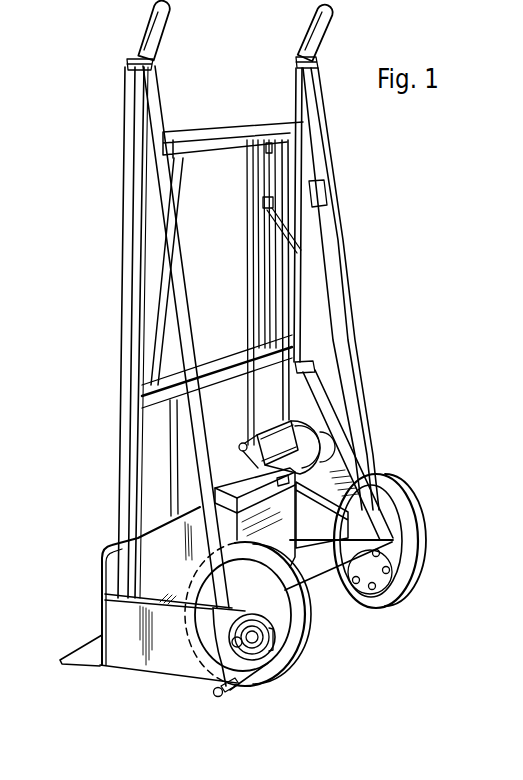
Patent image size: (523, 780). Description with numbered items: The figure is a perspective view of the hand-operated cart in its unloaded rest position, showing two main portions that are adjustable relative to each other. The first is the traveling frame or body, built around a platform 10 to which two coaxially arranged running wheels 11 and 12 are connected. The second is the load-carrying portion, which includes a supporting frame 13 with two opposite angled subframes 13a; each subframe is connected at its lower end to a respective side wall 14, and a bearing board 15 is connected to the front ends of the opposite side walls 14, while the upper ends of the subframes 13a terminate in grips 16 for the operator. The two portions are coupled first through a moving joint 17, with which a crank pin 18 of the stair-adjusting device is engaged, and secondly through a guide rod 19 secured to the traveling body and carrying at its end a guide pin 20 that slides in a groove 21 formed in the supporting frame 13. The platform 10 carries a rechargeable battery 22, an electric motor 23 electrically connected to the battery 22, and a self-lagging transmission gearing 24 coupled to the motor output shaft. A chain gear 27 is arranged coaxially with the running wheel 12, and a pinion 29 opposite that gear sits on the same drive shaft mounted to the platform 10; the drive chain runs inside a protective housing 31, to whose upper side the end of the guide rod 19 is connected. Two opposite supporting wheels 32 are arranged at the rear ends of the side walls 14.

The platform 10 is at (325, 574).
The running wheel 11 is at (305, 620).
The running wheel 12 is at (420, 562).
The supporting frame 13 is at (227, 133).
The angled subframes 13a is at (163, 244).
The side wall 14 is at (130, 650).
The bearing board 15 is at (88, 653).
The grips 16 is at (312, 27).
The moving joint 17 is at (214, 694).
The crank pin 18 is at (233, 693).
The guide rod 19 is at (297, 285).
The guide pin 20 is at (265, 208).
The groove 21 is at (270, 133).
The battery 22 is at (236, 482).
The electric motor 23 is at (343, 507).
The self-lagging transmission gearing 24 is at (313, 447).
The chain gear 27 is at (390, 588).
The pinion 29 is at (262, 670).
The protective housing 31 is at (355, 457).
The supporting wheels 32 is at (420, 520).